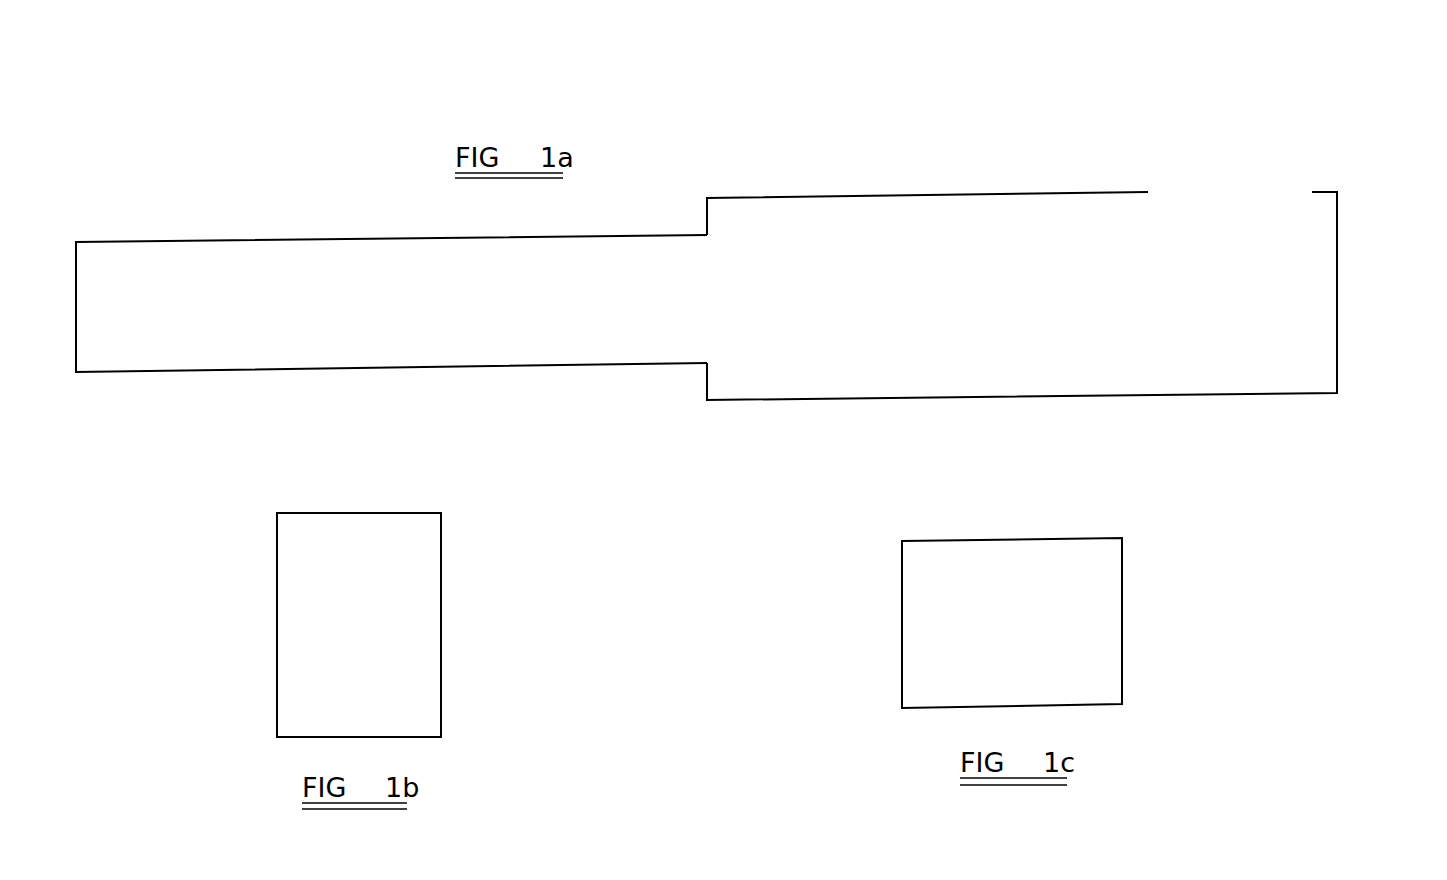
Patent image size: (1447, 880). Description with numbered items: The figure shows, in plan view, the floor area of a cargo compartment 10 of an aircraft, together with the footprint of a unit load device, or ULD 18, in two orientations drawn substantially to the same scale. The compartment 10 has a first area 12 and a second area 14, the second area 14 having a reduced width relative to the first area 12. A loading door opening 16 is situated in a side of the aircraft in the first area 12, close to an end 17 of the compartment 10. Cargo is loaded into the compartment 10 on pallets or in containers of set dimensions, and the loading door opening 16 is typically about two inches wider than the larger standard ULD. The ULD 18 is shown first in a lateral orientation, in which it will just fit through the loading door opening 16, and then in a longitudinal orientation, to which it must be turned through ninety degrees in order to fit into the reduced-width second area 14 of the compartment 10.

In FIG. 1A, the cargo compartment 10 is at (285, 172).
In FIG. 1A, the first area 12 is at (1000, 300).
In FIG. 1A, the second area 14 is at (397, 308).
In FIG. 1A, the loading door opening 16 is at (1225, 193).
In FIG. 1A, the end 17 is at (1337, 282).
In FIG. 1B, the ULD 18 is at (393, 621).
In FIG. 1C, the ULD 18 is at (1047, 622).